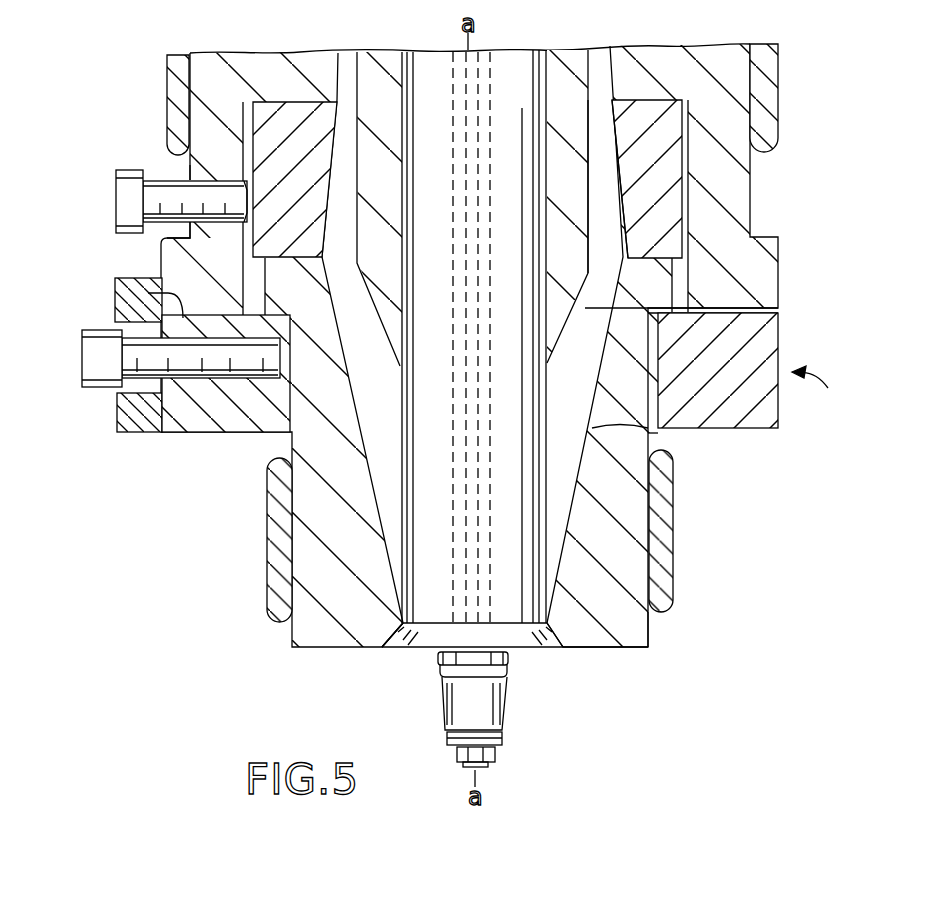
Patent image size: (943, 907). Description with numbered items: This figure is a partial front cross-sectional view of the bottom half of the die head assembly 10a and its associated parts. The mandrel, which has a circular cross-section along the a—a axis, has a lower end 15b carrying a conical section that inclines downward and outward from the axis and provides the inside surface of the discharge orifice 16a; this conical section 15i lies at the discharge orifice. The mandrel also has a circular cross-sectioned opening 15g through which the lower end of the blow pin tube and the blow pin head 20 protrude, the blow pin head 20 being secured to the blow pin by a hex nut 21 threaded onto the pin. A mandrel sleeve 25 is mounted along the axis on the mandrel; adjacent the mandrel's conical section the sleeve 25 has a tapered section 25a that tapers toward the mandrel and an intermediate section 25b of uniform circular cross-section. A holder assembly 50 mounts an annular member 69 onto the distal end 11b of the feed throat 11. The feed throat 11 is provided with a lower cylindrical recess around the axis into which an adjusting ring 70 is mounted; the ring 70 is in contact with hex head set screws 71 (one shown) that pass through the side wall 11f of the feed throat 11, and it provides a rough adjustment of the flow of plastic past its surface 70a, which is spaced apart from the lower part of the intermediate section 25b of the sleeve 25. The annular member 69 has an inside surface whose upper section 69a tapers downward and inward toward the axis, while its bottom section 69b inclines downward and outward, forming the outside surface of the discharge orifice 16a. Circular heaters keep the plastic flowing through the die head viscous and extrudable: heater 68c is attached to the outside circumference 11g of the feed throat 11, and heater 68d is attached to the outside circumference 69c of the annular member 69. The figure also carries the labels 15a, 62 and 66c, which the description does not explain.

The die head assembly 10a is at (828, 391).
The feed throat 11 is at (282, 70).
The distal end of feed throat 11b is at (116, 297).
The side wall of feed throat 11f is at (172, 243).
The outside circumference of feed throat 11g is at (190, 166).
The central passage 15a is at (493, 80).
The lower end of mandrel 15b is at (527, 552).
The circular cross-sectioned opening 15g is at (430, 652).
The conical section 15i is at (518, 640).
The discharge orifice 16a is at (395, 640).
The blow pin head 20 is at (508, 712).
The hex nut 21 is at (495, 753).
The mandrel sleeve 25 is at (378, 77).
The tapered section 25a is at (650, 312).
The intermediate section 25b is at (580, 222).
The holder assembly 50 is at (183, 433).
The spacer 62 is at (117, 426).
The flange bolt 66c is at (82, 355).
The circular heater 68c is at (168, 80).
The circular heater 68d is at (268, 548).
The annular member 69 is at (620, 495).
The upper section of inside surface 69a is at (650, 432).
The bottom section 69b is at (572, 635).
The outside circumference of annular member 69c is at (650, 623).
The adjusting ring 70 is at (677, 192).
The surface of adjusting ring 70a is at (616, 157).
The hex head set screws 71 is at (116, 200).